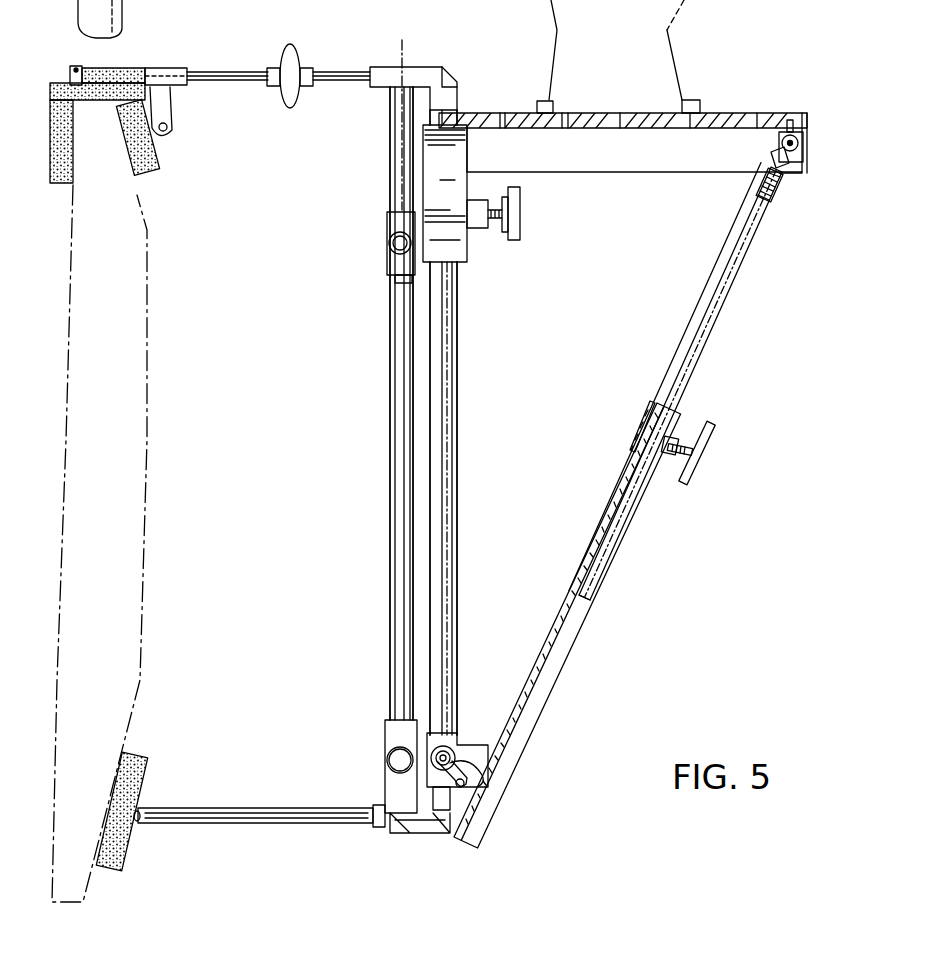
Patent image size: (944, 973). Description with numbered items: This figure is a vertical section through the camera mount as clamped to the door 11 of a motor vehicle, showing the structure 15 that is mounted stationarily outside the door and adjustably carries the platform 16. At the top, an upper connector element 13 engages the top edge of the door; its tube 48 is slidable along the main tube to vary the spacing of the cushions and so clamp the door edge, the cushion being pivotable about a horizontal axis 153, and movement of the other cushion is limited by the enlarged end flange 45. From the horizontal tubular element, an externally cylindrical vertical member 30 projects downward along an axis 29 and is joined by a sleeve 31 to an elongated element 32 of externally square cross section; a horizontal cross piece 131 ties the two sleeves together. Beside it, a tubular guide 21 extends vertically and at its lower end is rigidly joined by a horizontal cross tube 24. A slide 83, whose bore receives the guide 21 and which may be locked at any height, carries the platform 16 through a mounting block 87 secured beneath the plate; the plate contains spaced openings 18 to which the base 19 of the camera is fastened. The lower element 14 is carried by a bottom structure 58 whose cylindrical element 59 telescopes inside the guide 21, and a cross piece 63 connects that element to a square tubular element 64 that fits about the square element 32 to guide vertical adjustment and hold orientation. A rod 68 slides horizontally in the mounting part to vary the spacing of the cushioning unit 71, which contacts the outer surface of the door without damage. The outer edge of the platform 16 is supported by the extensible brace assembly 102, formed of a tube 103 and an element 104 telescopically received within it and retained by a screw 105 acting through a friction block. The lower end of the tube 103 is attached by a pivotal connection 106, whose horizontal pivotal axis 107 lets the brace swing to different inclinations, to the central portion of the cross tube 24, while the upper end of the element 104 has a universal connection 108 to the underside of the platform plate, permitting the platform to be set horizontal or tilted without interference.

The door 11 is at (147, 345).
The upper connector element 13 is at (280, 32).
The lower element 14 is at (223, 793).
The structure 15 is at (472, 418).
The platform 16 is at (737, 108).
The spaced openings 18 is at (562, 112).
The base of the camera 19 is at (616, 50).
The tubular guide 21 is at (445, 480).
The cross tube 24 is at (447, 750).
The axis 29 is at (402, 112).
The vertical member 30 is at (388, 180).
The sleeve 31 is at (387, 223).
The elongated element 32 is at (400, 278).
The end flange 45 is at (72, 68).
The tube 48 is at (165, 72).
The bottom structure 58 is at (391, 838).
The element 59 is at (452, 820).
The cross piece 63 is at (423, 837).
The tubular element 64 is at (398, 462).
The rod 68 is at (277, 806).
The cushioning unit 71 is at (147, 758).
The slide 83 is at (457, 177).
The mounting block 87 is at (630, 157).
The brace assembly 102 is at (723, 493).
The tube 103 is at (567, 663).
The element 104 is at (710, 330).
The screw 105 is at (710, 438).
The connection 106 is at (480, 770).
The pivotal axis 107 is at (463, 787).
The universal connection 108 is at (803, 152).
The horizontal cross piece 131 is at (453, 268).
The horizontal axis 153 is at (172, 127).